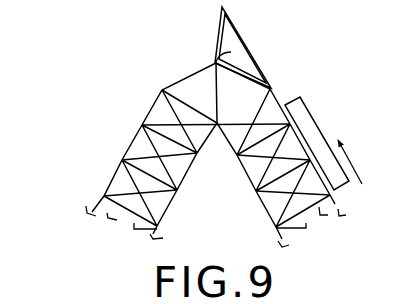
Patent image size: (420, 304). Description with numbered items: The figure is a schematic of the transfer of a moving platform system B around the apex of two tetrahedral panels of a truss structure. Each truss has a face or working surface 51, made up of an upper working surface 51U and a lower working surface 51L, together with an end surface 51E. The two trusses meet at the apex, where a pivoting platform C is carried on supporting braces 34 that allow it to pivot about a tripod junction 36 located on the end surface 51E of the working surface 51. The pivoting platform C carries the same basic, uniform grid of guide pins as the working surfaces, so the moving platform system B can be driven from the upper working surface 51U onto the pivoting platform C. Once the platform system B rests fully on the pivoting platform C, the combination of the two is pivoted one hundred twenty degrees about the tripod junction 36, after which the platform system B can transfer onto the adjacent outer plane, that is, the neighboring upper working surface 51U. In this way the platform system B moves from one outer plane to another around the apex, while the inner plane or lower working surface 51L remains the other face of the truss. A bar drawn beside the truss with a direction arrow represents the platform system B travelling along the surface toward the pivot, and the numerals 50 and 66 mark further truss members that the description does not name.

The supporting braces 34 is at (220, 45).
The pivoting platform C is at (253, 50).
The tripod junction 36 is at (223, 70).
The end surface 51E is at (193, 107).
The upper working surface 51U is at (138, 133).
The working surface 51 is at (120, 161).
The horizontal tie member 50 is at (247, 173).
The lower working surface 51L is at (177, 203).
The second truss lower chord 66 is at (263, 205).
The moving platform system B is at (320, 138).